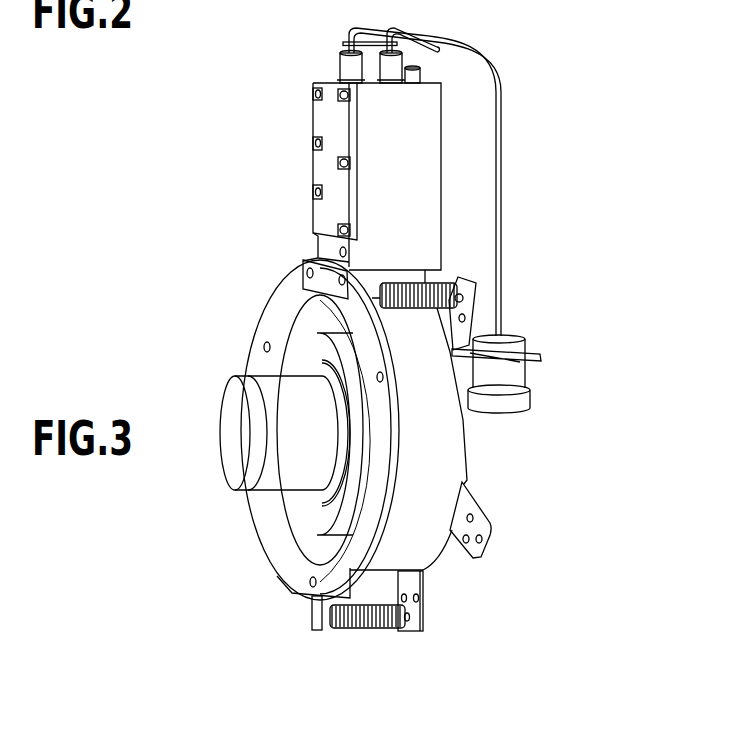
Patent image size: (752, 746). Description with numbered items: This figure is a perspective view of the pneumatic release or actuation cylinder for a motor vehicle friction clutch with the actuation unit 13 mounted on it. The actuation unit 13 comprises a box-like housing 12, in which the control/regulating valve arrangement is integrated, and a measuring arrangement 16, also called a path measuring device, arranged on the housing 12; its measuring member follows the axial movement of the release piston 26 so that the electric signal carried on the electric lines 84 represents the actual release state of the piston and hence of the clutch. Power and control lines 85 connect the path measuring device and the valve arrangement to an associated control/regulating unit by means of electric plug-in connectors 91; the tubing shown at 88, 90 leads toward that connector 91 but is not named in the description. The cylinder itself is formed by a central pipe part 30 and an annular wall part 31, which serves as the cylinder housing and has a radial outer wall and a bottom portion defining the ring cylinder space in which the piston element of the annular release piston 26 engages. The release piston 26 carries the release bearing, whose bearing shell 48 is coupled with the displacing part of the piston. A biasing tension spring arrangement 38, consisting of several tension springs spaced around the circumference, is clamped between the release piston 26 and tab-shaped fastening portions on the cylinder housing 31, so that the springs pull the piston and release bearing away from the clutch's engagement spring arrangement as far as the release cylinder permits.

The housing 12 is at (436, 147).
The actuation unit 13 is at (294, 118).
The measuring arrangement 16 is at (410, 278).
The release piston 26 is at (290, 287).
The pipe part 30 is at (297, 393).
The annular wall part 31 is at (467, 442).
The biasing tension spring arrangement 38 is at (450, 282).
The bearing shell 48 is at (293, 502).
The electric lines 84 is at (353, 27).
The power and control lines 85 is at (350, 44).
The conduit 88 is at (453, 175).
The tube 90 is at (496, 60).
The electric plug-in connectors 91 is at (522, 382).